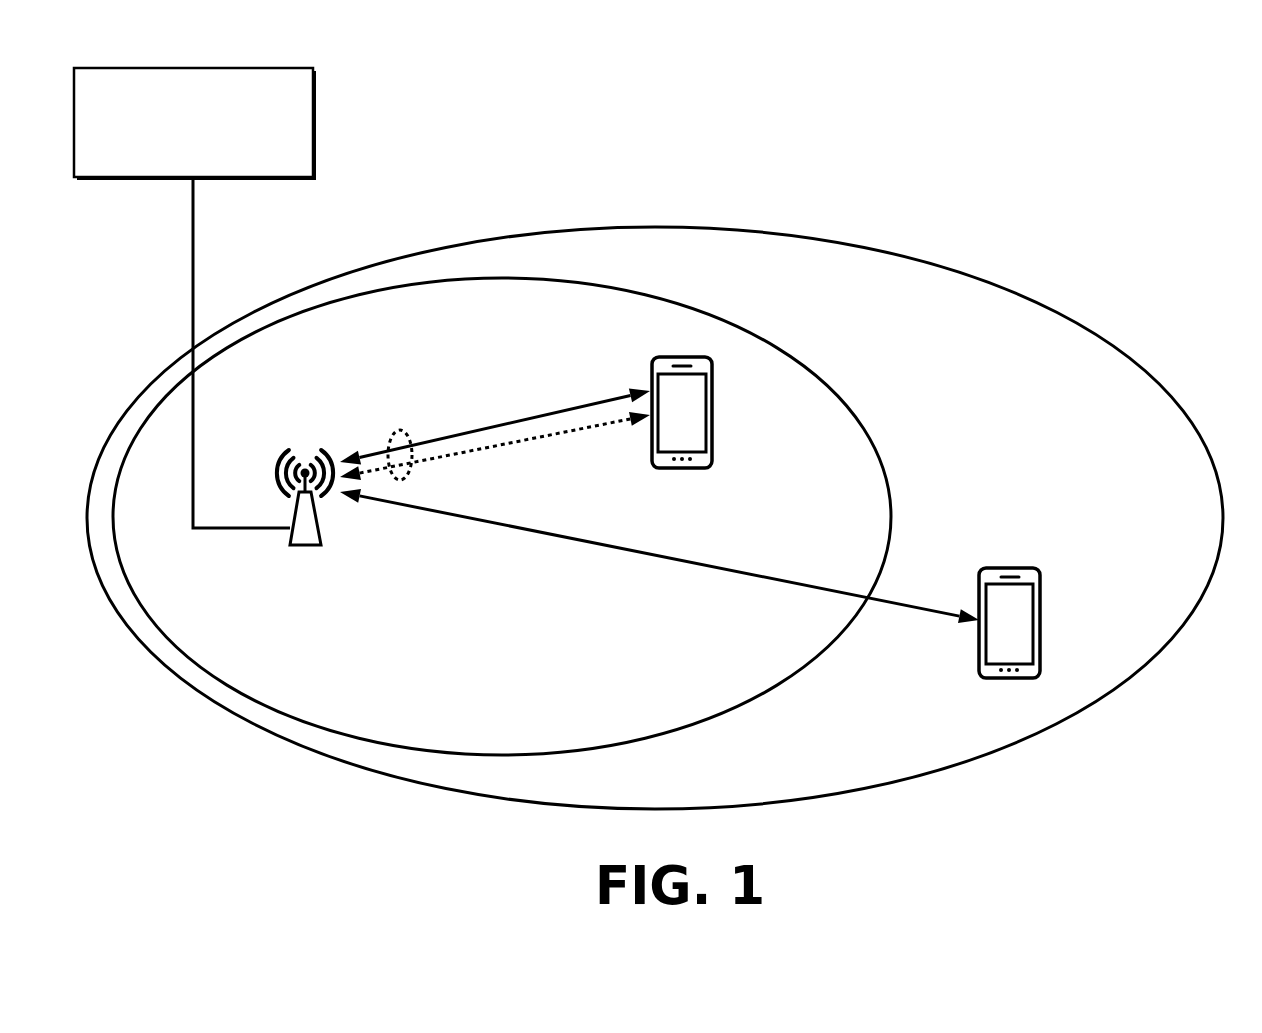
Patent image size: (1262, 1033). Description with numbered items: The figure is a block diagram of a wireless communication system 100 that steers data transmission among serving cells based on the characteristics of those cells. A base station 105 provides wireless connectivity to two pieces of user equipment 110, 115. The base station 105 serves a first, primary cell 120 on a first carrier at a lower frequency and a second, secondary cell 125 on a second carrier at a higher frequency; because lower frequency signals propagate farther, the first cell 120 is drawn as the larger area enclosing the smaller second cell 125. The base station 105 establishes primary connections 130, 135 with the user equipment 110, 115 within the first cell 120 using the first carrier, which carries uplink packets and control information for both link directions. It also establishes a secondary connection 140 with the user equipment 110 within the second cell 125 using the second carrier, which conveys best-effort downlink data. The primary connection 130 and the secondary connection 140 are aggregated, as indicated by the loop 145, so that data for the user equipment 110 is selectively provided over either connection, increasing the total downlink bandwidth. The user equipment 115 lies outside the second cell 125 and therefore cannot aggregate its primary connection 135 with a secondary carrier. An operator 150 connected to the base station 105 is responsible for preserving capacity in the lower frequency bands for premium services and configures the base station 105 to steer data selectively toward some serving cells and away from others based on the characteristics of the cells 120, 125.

The wireless communication system 100 is at (1183, 115).
The base station 105 is at (308, 548).
The user equipment 110 is at (681, 470).
The user equipment 115 is at (1040, 622).
The first cell 120 is at (1100, 330).
The second cell 125 is at (800, 360).
The primary connection 130 is at (505, 422).
The primary connection 135 is at (643, 560).
The secondary connection 140 is at (510, 445).
The loop 145 is at (401, 430).
The operator 150 is at (195, 298).